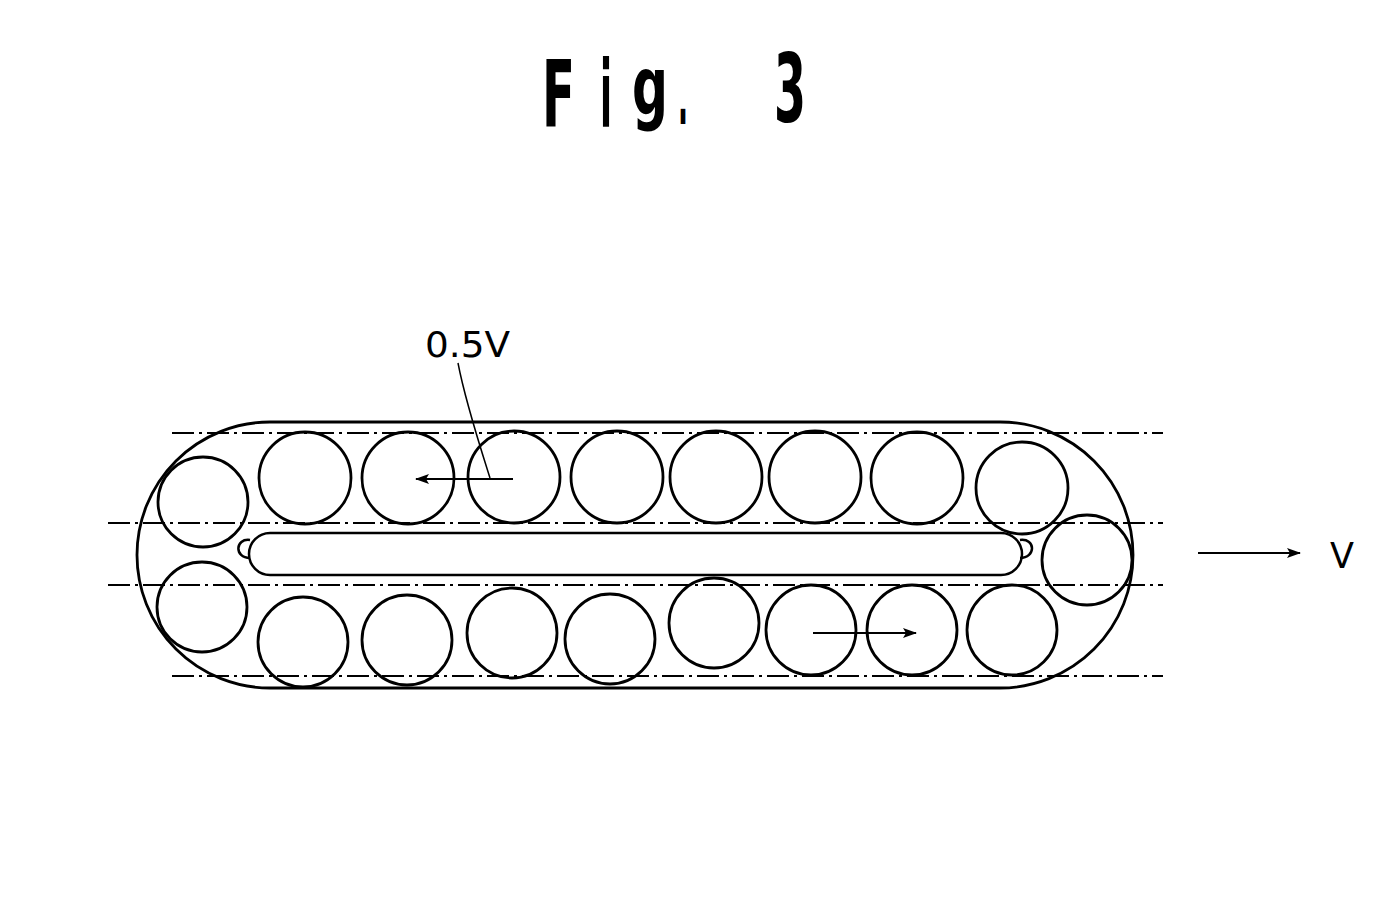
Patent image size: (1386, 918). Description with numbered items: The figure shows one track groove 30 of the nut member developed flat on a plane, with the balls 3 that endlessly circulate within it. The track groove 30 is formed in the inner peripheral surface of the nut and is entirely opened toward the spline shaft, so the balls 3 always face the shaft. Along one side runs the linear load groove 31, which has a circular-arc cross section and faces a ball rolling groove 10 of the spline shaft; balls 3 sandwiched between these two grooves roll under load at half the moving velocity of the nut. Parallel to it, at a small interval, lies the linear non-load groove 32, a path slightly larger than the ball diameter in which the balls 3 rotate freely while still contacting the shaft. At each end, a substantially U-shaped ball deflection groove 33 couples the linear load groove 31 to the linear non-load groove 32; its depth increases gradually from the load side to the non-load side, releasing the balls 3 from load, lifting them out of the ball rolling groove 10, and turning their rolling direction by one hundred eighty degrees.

The ball 3 is at (633, 467).
The ball rolling groove 10 is at (1135, 432).
The track groove 30 is at (964, 418).
The linear load groove 31 is at (564, 424).
The linear non-load groove 32 is at (522, 688).
The ball deflection groove 33 is at (253, 541).